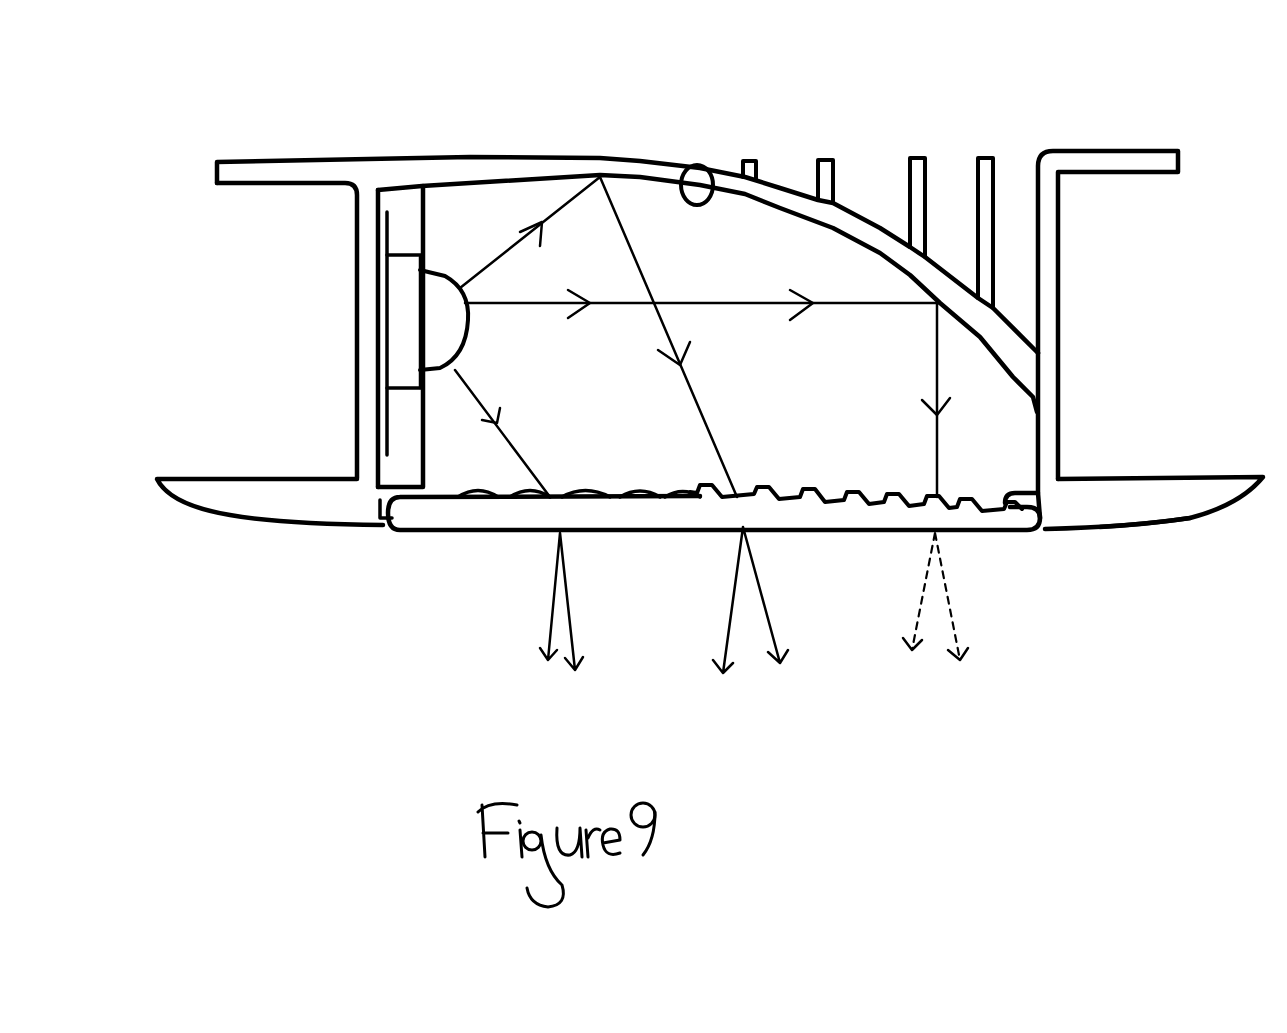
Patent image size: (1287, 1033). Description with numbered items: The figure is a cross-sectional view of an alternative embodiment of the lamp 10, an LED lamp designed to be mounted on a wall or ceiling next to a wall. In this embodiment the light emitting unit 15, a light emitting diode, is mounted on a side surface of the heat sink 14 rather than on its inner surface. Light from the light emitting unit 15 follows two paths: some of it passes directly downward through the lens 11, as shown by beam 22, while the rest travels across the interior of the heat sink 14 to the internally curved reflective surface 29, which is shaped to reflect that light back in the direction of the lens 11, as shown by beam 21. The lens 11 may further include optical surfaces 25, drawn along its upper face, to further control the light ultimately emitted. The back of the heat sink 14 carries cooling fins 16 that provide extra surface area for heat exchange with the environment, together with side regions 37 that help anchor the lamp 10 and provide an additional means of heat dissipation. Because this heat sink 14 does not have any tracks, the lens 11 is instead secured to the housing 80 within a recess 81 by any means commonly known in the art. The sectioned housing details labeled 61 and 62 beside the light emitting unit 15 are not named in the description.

The lamp 10 is at (428, 66).
The reflective surface 29 is at (690, 165).
The cooling fins 16 is at (752, 172).
The side regions 37 is at (1140, 160).
The heat sink 14 is at (1060, 262).
The LED housing 61 is at (383, 333).
The circuit board 62 is at (385, 434).
The light emitting unit 15 is at (445, 365).
The beam 21 is at (833, 303).
The beam 22 is at (513, 432).
The lens 11 is at (817, 532).
The optical surfaces 25 is at (873, 500).
The recess 81 is at (1040, 522).
The housing 80 is at (1190, 508).